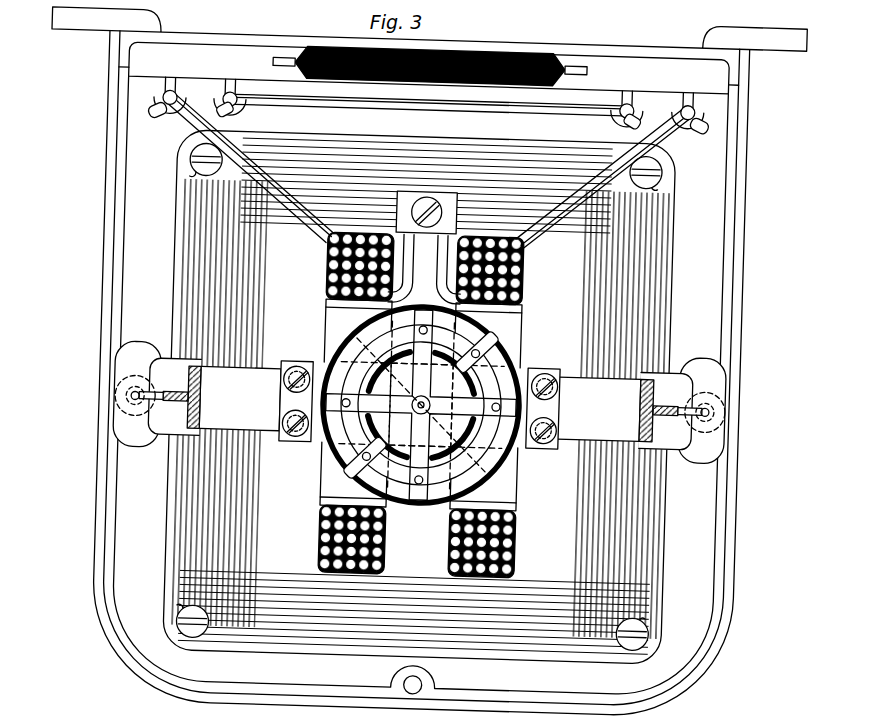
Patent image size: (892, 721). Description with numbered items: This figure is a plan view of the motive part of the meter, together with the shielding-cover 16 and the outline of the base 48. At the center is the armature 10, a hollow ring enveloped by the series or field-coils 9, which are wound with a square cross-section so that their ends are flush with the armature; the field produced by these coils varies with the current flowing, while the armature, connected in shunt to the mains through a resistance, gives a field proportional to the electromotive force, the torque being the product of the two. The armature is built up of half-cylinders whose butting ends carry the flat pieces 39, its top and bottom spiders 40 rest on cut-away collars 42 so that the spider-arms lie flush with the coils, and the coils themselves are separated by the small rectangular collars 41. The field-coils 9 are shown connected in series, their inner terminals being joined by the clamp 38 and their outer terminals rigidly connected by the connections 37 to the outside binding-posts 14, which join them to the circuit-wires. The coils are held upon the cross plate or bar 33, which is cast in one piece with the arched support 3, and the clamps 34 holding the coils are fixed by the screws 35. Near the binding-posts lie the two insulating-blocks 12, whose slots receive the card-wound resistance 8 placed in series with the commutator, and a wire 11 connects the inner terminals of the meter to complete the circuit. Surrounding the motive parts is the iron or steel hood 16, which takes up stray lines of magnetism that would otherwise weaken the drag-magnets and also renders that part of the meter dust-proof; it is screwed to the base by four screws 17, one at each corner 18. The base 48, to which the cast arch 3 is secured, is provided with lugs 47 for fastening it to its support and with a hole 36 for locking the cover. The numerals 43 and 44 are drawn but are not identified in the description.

The arched support 3 is at (197, 396).
The resistance 8 is at (496, 80).
The series or field-coils 9 is at (512, 276).
The armature 10 is at (344, 352).
The wire 11 is at (564, 110).
The insulating-blocks 12 is at (429, 68).
The outside binding-posts 14 is at (220, 97).
The shielding-cover or hood 16 is at (419, 397).
The screws 17 is at (190, 170).
The corner 18 is at (183, 184).
The cross plate or bar 33 is at (641, 409).
The clamps 34 is at (290, 405).
The screws 35 is at (297, 441).
The hole 36 is at (432, 684).
The connection 37 is at (312, 228).
The clamp 38 is at (436, 226).
The flat pieces 39 is at (480, 345).
The spiders 40 is at (426, 418).
The collars 41 is at (487, 468).
The collars 42 is at (420, 492).
The bracket 43 is at (518, 448).
The hole 44 is at (426, 474).
The lugs 47 is at (777, 34).
The base 48 is at (420, 375).